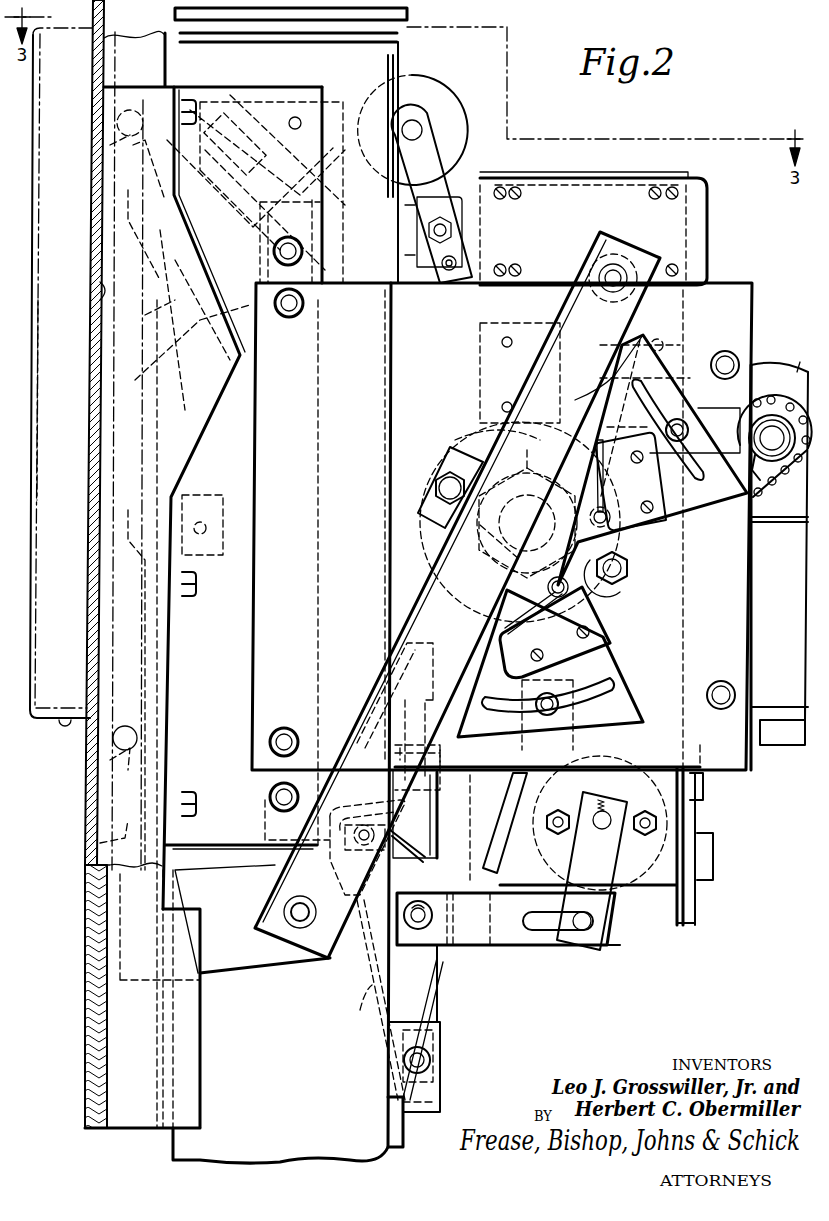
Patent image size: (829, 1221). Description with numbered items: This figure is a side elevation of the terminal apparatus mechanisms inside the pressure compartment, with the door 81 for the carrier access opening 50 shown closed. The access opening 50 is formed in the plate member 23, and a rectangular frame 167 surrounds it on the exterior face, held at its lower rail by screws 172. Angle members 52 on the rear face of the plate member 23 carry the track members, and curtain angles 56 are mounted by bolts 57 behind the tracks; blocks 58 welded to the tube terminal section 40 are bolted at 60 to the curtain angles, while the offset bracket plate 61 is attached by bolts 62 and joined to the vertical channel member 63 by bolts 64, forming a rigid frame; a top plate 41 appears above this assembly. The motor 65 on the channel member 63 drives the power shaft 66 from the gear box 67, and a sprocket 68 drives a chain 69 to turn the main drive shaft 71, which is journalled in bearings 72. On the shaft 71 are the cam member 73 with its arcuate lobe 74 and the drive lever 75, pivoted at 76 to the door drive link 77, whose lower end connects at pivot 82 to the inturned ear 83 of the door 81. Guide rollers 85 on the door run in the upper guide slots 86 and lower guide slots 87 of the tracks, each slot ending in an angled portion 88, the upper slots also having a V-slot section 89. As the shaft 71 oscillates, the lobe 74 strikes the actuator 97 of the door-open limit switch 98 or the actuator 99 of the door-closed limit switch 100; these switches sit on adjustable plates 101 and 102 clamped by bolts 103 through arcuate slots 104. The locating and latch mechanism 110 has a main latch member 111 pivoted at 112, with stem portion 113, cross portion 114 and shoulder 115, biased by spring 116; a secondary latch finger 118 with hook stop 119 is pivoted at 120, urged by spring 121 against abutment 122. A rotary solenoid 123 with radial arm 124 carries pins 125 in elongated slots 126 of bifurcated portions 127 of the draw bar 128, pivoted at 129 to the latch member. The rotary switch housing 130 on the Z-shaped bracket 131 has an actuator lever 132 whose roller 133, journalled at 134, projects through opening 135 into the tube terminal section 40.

The plate member 23 is at (88, 912).
The tube terminal section 40 is at (268, 1049).
The top plate 41 is at (407, 17).
The carrier access opening 50 is at (87, 672).
The angle members 52 is at (143, 44).
The curtain angles 56 is at (295, 95).
The bolts 57 is at (192, 100).
The blocks 58 is at (258, 805).
The bolts 60 is at (302, 255).
The offset bracket plate 61 is at (718, 290).
The bolts 62 is at (292, 318).
The channel member 63 is at (690, 630).
The bolts 64 is at (727, 360).
The motor 65 is at (790, 672).
The power shaft 66 is at (772, 426).
The gear box 67 is at (797, 372).
The sprocket 68 is at (783, 462).
The chain 69 is at (768, 485).
The main drive shaft 71 is at (530, 468).
The bearings 72 is at (470, 445).
The cam member 73 is at (613, 588).
The arcuate lobe 74 is at (604, 440).
The drive lever 75 is at (630, 367).
The pivotal connection 76 is at (615, 270).
The door drive link 77 is at (430, 592).
The door 81 is at (98, 277).
The pivotal connections 82 is at (302, 925).
The inturned ears 83 is at (222, 962).
The guide rollers 85 is at (110, 745).
The upper guide slots 86 is at (128, 520).
The lower guide slots 87 is at (100, 847).
The angled slot portion 88 is at (118, 760).
The V-slot section 89 is at (145, 318).
The actuator 97 is at (593, 608).
The limit switch 98 is at (565, 650).
The actuator 99 is at (640, 500).
The limit switch 100 is at (610, 525).
The adjustable plate 101 is at (625, 697).
The adjustable plate 102 is at (705, 515).
The bolts 103 is at (688, 423).
The arcuate slots 104 is at (700, 460).
The locating and latch mechanism 110 is at (452, 1017).
The main latch member 111 is at (445, 957).
The pivot 112 is at (432, 1058).
The vertical stem portion 113 is at (418, 986).
The cross portion 114 is at (372, 1000).
The shoulder 115 is at (352, 808).
The spring 116 is at (440, 990).
The secondary latch finger 118 is at (437, 800).
The hook stop 119 is at (372, 705).
The pivot 120 is at (366, 850).
The spring 121 is at (420, 840).
The abutment 122 is at (440, 752).
The rotary solenoid 123 is at (648, 900).
The radial arm 124 is at (575, 850).
The pins 125 is at (580, 930).
The elongated slots 126 is at (545, 950).
The bifurcated portions 127 is at (508, 945).
The draw bar 128 is at (483, 921).
The pivotal connection 129 is at (425, 905).
The rotary switch housing 130 is at (697, 215).
The Z-shaped bracket 131 is at (678, 178).
The actuator lever 132 is at (442, 198).
The roller 133 is at (443, 100).
The journal 134 is at (424, 128).
The opening 135 is at (397, 65).
The rectangular frame 167 is at (70, 433).
The screws 172 is at (62, 724).